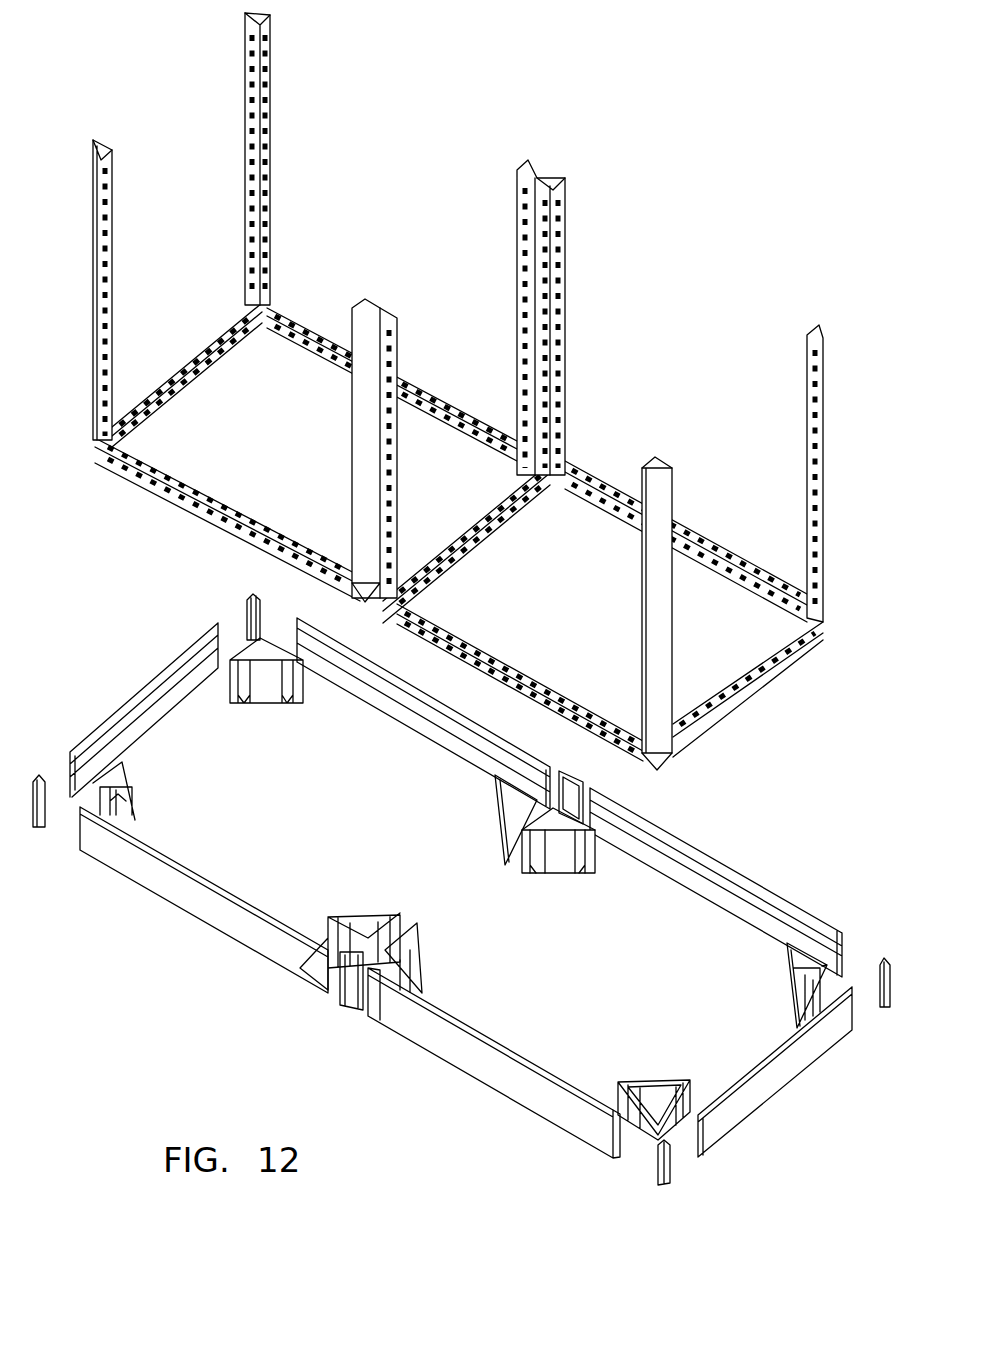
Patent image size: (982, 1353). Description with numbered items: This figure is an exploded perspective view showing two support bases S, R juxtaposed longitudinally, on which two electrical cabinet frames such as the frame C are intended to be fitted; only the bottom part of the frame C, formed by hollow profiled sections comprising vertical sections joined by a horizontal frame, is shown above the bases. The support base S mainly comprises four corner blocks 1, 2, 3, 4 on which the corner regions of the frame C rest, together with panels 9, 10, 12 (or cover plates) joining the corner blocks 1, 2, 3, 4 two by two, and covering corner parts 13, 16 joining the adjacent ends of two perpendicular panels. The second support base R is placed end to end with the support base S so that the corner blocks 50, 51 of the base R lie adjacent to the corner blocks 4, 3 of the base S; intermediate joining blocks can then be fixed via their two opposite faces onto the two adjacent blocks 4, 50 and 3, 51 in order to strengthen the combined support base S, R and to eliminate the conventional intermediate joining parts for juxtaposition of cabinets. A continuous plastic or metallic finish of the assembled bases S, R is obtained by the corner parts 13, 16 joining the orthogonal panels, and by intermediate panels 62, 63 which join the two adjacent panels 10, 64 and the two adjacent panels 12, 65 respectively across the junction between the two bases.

The electrical cabinet frame C is at (377, 142).
The support base S is at (110, 968).
The support base R is at (460, 1145).
The corner block 1 is at (120, 770).
The corner block 2 is at (272, 643).
The corner block 3 is at (510, 792).
The corner block 4 is at (332, 952).
The panel 9 is at (183, 662).
The panel 10 is at (237, 927).
The panel 12 is at (432, 712).
The corner part 13 is at (36, 830).
The corner part 16 is at (248, 598).
The corner block 50 is at (412, 948).
The corner block 51 is at (562, 862).
The intermediate panel 62 is at (350, 990).
The intermediate panel 63 is at (585, 800).
The panel 64 is at (526, 1087).
The panel 65 is at (806, 924).